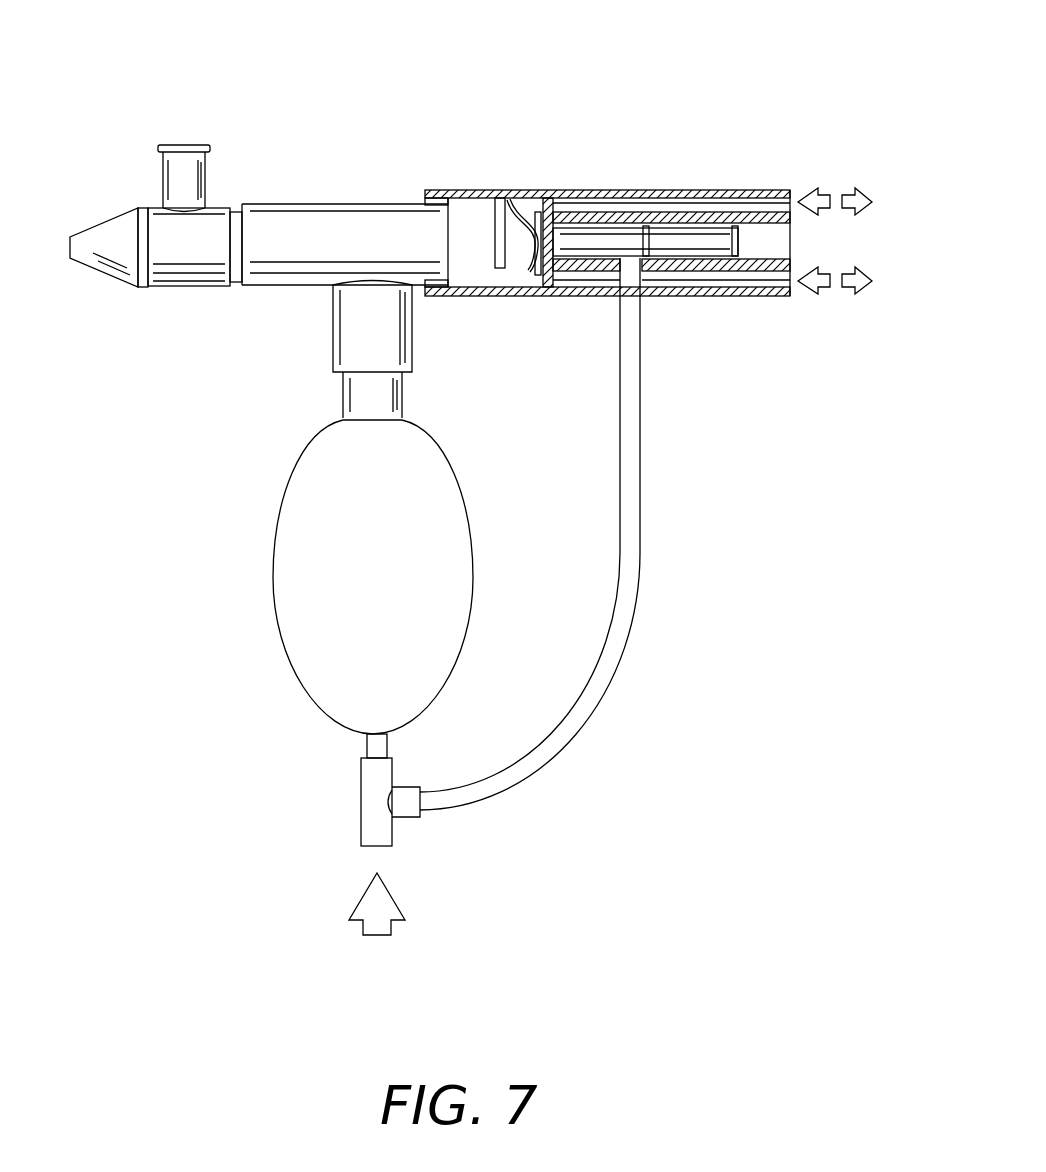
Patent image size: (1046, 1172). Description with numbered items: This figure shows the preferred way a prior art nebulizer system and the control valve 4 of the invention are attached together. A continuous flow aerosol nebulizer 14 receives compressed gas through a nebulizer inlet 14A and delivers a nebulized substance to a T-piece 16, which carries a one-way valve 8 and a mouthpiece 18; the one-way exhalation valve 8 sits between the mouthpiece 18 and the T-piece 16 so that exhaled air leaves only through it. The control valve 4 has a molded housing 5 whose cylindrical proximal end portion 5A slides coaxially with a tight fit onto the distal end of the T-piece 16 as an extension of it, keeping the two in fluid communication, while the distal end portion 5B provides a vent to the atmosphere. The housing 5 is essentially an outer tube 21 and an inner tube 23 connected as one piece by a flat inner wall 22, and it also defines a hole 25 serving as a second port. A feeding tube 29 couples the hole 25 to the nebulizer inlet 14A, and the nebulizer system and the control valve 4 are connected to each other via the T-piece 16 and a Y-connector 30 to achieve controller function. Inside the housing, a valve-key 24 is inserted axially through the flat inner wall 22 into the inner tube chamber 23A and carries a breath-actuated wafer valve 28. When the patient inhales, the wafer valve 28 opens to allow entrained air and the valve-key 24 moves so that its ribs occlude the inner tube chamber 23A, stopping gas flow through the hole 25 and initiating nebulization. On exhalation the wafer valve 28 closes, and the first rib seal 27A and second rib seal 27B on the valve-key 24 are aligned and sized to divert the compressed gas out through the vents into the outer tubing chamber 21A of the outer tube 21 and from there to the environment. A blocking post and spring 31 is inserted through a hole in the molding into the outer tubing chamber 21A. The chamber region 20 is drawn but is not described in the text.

The control valve 4 is at (766, 84).
The molded housing 5 is at (463, 296).
The proximal end portion 5A is at (435, 190).
The distal end portion 5B is at (778, 190).
The one-way valve 8 is at (185, 143).
The continuous flow aerosol nebulizer 14 is at (280, 512).
The nebulizer inlet 14A is at (362, 747).
The T-piece 16 is at (315, 204).
The mouthpiece 18 is at (100, 222).
The valve chamber 20 is at (443, 225).
The outer tube 21 is at (494, 292).
The outer tubing chamber 21A is at (732, 281).
The flat inner wall 22 is at (527, 196).
The inner tube 23 is at (617, 198).
The inner tube chamber 23A is at (770, 248).
The valve-key 24 is at (675, 240).
The hole 25 is at (632, 258).
The first rib seal 27A is at (672, 212).
The second rib seal 27B is at (757, 212).
The wafer valve 28 is at (527, 290).
The feeding tube 29 is at (633, 603).
The Y-connector 30 is at (361, 795).
The blocking post and spring 31 is at (497, 190).